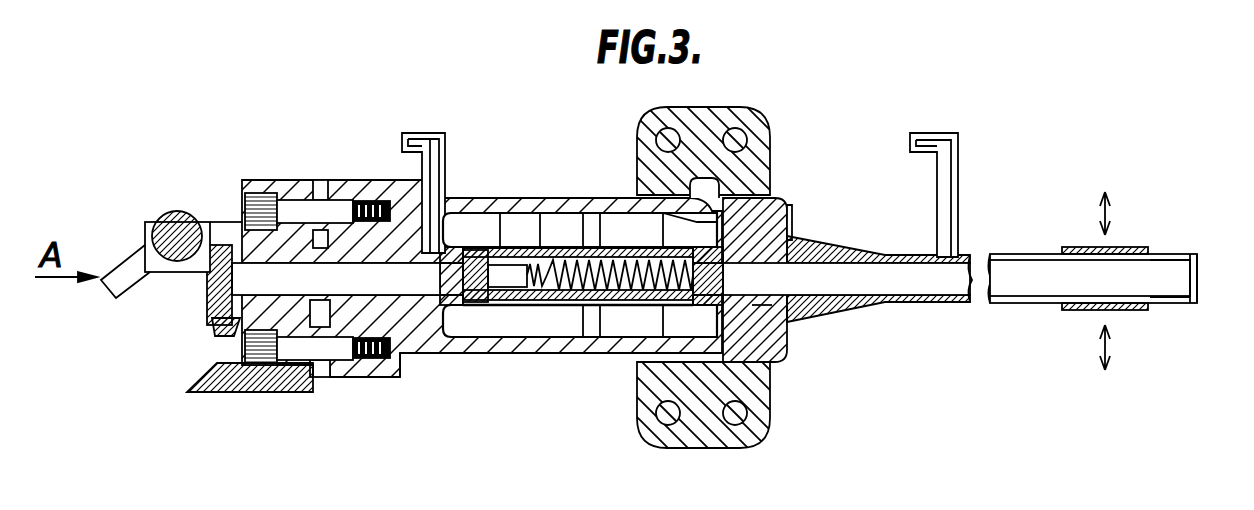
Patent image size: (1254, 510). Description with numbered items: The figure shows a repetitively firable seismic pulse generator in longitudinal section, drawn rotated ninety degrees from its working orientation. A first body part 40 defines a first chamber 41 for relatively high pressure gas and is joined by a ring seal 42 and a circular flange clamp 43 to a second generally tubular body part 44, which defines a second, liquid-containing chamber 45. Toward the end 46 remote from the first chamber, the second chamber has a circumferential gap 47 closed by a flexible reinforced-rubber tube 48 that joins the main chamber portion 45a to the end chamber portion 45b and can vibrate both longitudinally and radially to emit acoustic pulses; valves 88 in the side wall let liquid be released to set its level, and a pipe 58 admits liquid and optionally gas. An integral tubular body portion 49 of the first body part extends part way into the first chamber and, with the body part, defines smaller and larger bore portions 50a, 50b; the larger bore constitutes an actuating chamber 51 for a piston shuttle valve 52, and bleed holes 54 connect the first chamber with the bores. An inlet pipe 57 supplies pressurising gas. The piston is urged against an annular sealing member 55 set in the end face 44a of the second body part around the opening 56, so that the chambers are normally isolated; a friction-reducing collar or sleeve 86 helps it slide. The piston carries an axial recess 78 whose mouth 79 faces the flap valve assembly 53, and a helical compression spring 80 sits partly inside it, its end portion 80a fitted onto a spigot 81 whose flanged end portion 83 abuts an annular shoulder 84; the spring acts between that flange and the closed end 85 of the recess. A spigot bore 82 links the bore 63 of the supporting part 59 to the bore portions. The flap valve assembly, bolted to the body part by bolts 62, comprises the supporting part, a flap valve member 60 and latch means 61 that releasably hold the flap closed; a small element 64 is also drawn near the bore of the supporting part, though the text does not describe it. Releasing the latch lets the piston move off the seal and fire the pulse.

The first body part 40 is at (570, 170).
The first chamber 41 is at (418, 350).
The ring seal 42 is at (773, 355).
The circular flange clamp 43 is at (755, 430).
The second body part 44 is at (968, 303).
The end face 44a is at (778, 330).
The second chamber 45 is at (963, 263).
The main chamber portion 45a is at (1047, 270).
The end chamber portion 45b is at (1165, 270).
The end 46 is at (1228, 232).
The circumferential gap 47 is at (1122, 262).
The tube 48 is at (1124, 258).
The tubular body portion 49 is at (287, 370).
The smaller internal diameter bore portion 50a is at (320, 232).
The larger internal diameter bore portion 50b is at (598, 250).
The actuating chamber 51 is at (470, 330).
The piston shuttle valve 52 is at (655, 335).
The flap valve assembly 53 is at (260, 166).
The bleed holes 54 is at (383, 205).
The annular sealing member 55 is at (872, 304).
The opening 56 is at (788, 215).
The inlet pipe 57 is at (430, 133).
The pipe 58 is at (958, 160).
The supporting part 59 is at (215, 378).
The flap valve member 60 is at (218, 218).
The latch means 61 is at (163, 213).
The bolts 62 is at (262, 367).
The bore 63 is at (207, 282).
The retaining piece 64 is at (212, 318).
The recess 78 is at (570, 305).
The mouth 79 is at (530, 300).
The helical compression spring 80 is at (652, 225).
The end portion of the spring 80a is at (545, 255).
The spigot 81 is at (392, 355).
The spigot bore 82 is at (337, 366).
The flanged end portion 83 is at (497, 213).
The annular shoulder 84 is at (447, 215).
The closed end 85 is at (608, 340).
The collar or sleeve 86 is at (760, 205).
The valves 88 is at (1022, 304).